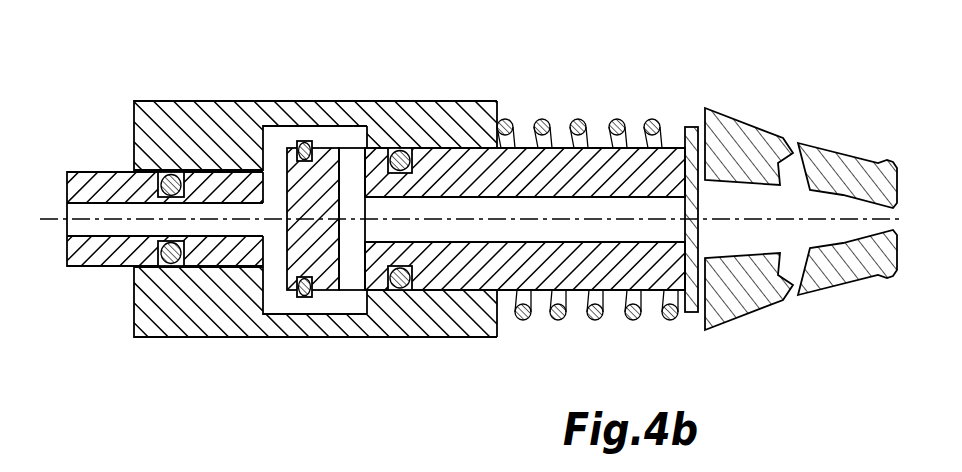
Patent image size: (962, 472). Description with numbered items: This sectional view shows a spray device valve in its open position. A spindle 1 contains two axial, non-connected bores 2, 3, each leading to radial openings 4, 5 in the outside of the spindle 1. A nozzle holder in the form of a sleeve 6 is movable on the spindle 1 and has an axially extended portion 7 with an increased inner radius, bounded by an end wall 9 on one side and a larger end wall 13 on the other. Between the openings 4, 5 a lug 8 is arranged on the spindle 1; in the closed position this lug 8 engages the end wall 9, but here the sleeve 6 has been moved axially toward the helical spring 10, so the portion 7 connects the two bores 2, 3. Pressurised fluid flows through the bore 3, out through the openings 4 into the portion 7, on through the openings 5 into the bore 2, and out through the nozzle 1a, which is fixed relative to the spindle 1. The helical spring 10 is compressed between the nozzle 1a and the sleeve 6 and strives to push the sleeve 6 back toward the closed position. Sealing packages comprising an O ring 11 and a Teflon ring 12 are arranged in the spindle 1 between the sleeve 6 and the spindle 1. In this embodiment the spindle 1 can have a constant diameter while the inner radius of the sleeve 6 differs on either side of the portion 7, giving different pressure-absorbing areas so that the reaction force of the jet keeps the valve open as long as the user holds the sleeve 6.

The spindle 1 is at (688, 129).
The nozzle 1a is at (833, 292).
The bore 2 is at (697, 189).
The bore 3 is at (79, 213).
The openings 4 is at (276, 183).
The openings 5 is at (315, 132).
The sleeve 6 is at (492, 122).
The axially extended portion with increased inner radius 7 is at (352, 168).
The lug 8 is at (307, 141).
The end wall 9 is at (400, 150).
The helical spring 10 is at (576, 119).
The O ring 11 is at (173, 267).
The Teflon ring 12 is at (148, 255).
The end wall 13 is at (262, 114).